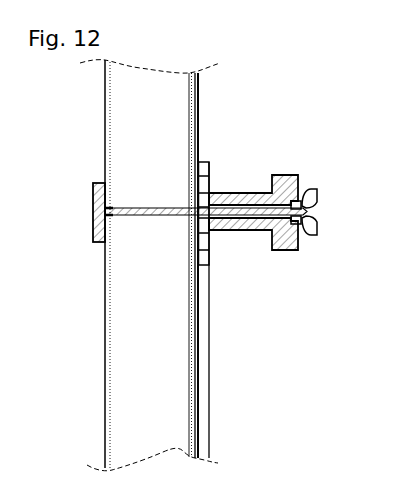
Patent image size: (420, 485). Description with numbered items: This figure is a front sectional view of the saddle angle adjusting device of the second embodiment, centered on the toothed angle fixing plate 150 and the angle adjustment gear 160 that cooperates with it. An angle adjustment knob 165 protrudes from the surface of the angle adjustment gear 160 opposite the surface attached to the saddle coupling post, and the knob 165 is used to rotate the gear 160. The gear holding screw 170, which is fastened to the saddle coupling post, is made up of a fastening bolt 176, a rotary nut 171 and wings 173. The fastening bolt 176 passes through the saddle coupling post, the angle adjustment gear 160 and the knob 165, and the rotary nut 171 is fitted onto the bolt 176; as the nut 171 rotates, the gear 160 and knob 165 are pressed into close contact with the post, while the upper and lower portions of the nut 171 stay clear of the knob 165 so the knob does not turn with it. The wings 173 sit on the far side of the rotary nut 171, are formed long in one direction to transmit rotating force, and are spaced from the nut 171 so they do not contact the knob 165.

The toothed angle fixing plate 150 is at (210, 360).
The angle adjustment gear 160 is at (207, 162).
The angle adjustment knob 165 is at (290, 175).
The gear holding screw 170 is at (318, 228).
The rotary nut 171 is at (303, 236).
The wings 173 is at (318, 192).
The fastening bolt 176 is at (97, 183).